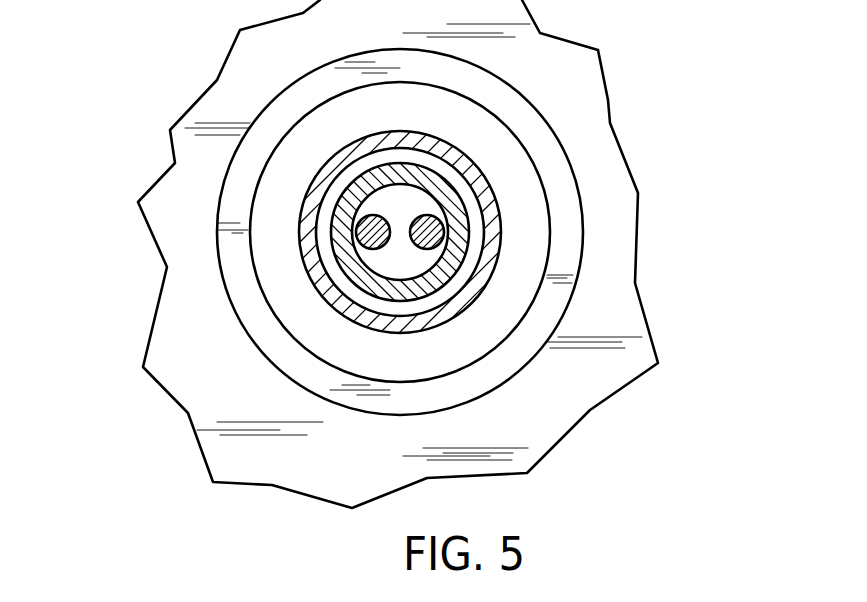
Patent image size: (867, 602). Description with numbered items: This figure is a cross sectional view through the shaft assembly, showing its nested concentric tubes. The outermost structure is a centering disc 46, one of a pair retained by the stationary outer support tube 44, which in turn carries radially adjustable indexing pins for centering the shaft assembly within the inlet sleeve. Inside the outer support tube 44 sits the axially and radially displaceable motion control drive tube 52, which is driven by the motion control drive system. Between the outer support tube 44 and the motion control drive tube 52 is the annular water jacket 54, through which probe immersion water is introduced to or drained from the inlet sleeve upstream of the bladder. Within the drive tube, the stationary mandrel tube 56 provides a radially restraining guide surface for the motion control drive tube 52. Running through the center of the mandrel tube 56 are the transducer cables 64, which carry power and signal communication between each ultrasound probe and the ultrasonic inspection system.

The outer support tube 44 is at (243, 201).
The centering discs 46 is at (593, 105).
The motion control drive tube 52 is at (370, 316).
The annular water jacket 54 is at (352, 117).
The mandrel tube 56 is at (420, 287).
The transducer cable 64 is at (372, 237).